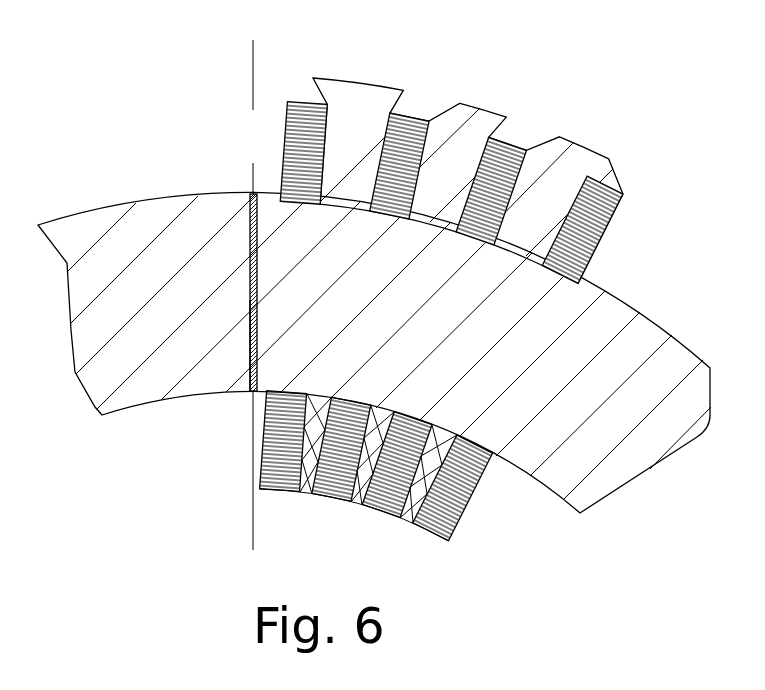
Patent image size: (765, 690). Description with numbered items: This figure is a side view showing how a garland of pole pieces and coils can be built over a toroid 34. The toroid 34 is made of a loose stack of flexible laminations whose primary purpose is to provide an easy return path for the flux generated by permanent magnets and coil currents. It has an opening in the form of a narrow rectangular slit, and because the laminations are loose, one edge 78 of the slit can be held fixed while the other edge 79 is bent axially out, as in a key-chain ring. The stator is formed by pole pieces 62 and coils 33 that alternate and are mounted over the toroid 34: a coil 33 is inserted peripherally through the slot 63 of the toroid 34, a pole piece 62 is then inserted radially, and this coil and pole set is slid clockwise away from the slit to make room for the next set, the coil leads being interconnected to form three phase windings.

The coil 33 is at (295, 100).
The toroid 34 is at (193, 217).
The pole piece 62 is at (345, 86).
The slot 63 is at (262, 398).
The edge of the slit 78 is at (257, 265).
The other edge of the slit 79 is at (247, 317).